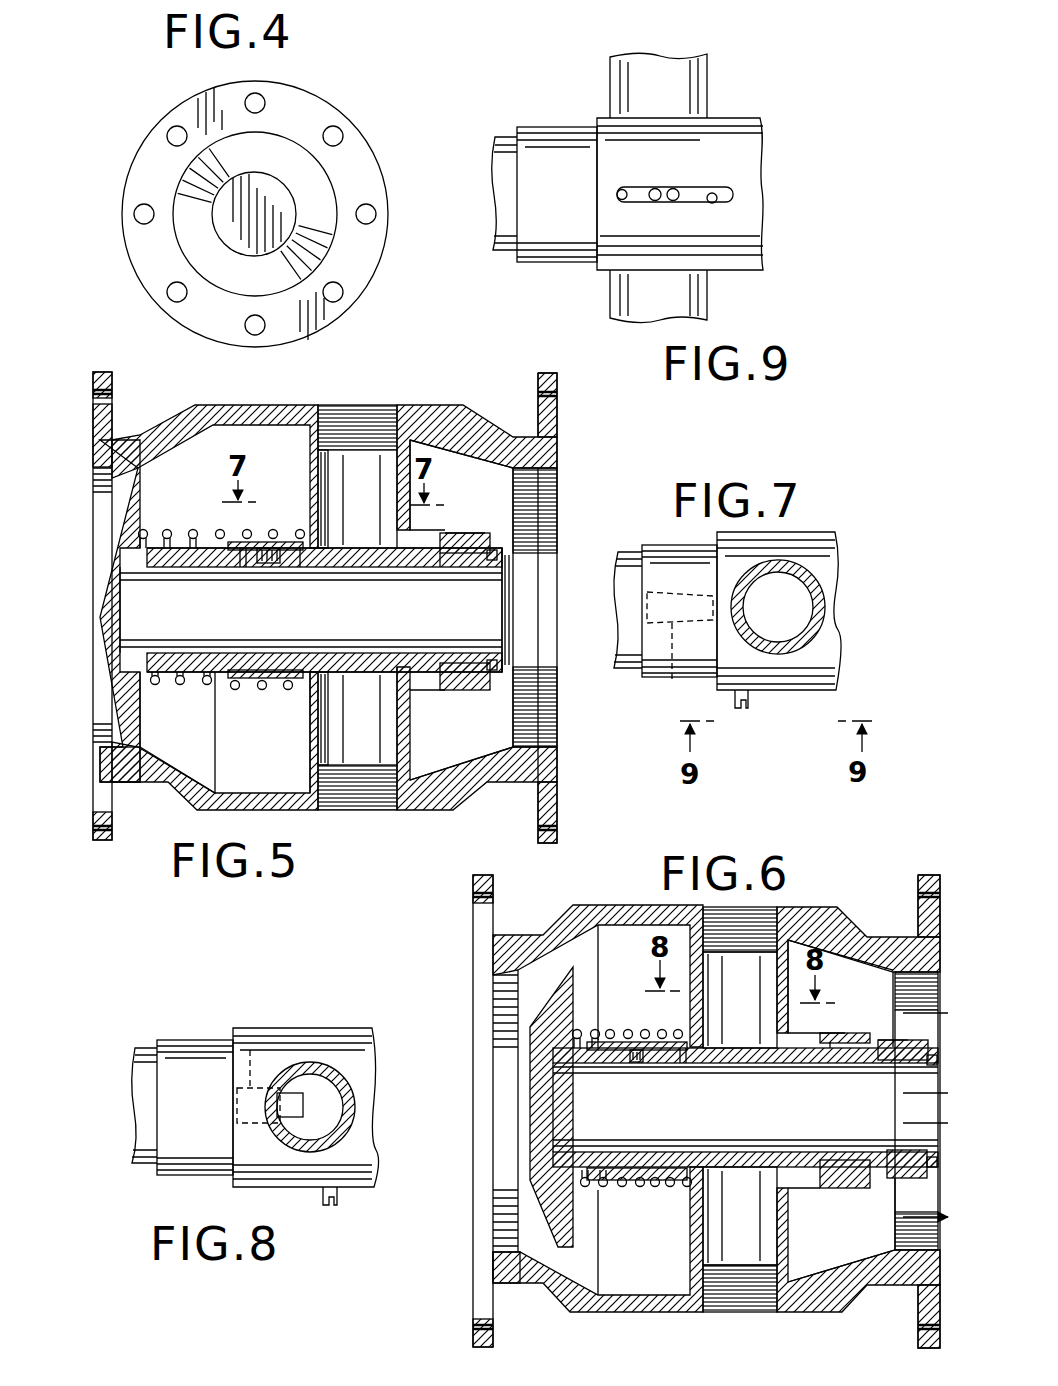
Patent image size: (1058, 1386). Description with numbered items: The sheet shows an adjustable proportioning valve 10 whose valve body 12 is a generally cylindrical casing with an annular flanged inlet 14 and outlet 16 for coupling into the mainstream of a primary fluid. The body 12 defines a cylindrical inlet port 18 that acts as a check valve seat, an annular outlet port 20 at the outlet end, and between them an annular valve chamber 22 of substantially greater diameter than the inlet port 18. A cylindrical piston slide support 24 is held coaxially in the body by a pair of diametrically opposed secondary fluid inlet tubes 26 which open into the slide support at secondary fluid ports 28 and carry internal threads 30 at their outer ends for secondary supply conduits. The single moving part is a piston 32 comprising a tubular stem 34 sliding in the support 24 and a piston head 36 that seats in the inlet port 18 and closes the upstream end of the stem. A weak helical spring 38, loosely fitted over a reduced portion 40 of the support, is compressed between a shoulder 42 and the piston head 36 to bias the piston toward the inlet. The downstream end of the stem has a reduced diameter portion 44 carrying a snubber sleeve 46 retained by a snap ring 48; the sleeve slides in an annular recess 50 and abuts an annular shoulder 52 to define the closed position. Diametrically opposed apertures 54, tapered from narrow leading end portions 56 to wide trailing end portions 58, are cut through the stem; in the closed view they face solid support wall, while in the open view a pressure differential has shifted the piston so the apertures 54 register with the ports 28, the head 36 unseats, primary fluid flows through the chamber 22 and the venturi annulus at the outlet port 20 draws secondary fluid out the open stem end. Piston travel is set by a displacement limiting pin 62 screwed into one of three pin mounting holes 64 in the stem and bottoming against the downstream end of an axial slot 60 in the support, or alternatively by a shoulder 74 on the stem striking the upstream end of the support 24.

In FIG. 4, the adjustable proportioning valve 10 is at (330, 90).
In FIG. 5, the adjustable proportioning valve 10 is at (418, 396).
In FIG. 6, the adjustable proportioning valve 10 is at (835, 892).
In FIG. 5, the valve body 12 is at (252, 405).
In FIG. 6, the valve body 12 is at (605, 905).
In FIG. 4, the inlet 14 is at (358, 168).
In FIG. 5, the inlet 14 is at (92, 437).
In FIG. 6, the inlet 14 is at (473, 941).
In FIG. 5, the outlet 16 is at (557, 452).
In FIG. 6, the outlet 16 is at (928, 905).
In FIG. 4, the inlet port 18 is at (330, 250).
In FIG. 5, the inlet port 18 is at (94, 478).
In FIG. 6, the inlet port 18 is at (623, 957).
In FIG. 5, the outlet port 20 is at (545, 496).
In FIG. 6, the outlet port 20 is at (918, 966).
In FIG. 5, the valve chamber 22 is at (311, 651).
In FIG. 6, the valve chamber 22 is at (745, 1150).
In FIG. 9, the piston slide support 24 is at (752, 162).
In FIG. 5, the piston slide support 24 is at (448, 530).
In FIG. 7, the piston slide support 24 is at (825, 573).
In FIG. 8, the piston slide support 24 is at (348, 1030).
In FIG. 6, the piston slide support 24 is at (816, 1035).
In FIG. 9, the secondary fluid inlet tubes 26 is at (700, 93).
In FIG. 5, the secondary fluid inlet tubes 26 is at (318, 470).
In FIG. 7, the secondary fluid inlet tubes 26 is at (818, 612).
In FIG. 8, the secondary fluid inlet tubes 26 is at (355, 1106).
In FIG. 6, the secondary fluid inlet tubes 26 is at (700, 1013).
In FIG. 5, the secondary fluid ports 28 is at (338, 548).
In FIG. 6, the secondary fluid ports 28 is at (735, 1048).
In FIG. 5, the internal threads 30 is at (380, 410).
In FIG. 6, the internal threads 30 is at (770, 910).
In FIG. 4, the piston 32 is at (232, 273).
In FIG. 5, the piston 32 is at (110, 737).
In FIG. 6, the piston 32 is at (610, 1264).
In FIG. 9, the tubular stem 34 is at (505, 140).
In FIG. 5, the tubular stem 34 is at (200, 686).
In FIG. 7, the tubular stem 34 is at (622, 677).
In FIG. 8, the tubular stem 34 is at (136, 1050).
In FIG. 6, the tubular stem 34 is at (650, 1187).
In FIG. 4, the piston head 36 is at (196, 240).
In FIG. 5, the piston head 36 is at (100, 626).
In FIG. 6, the piston head 36 is at (530, 1083).
In FIG. 5, the helical spring 38 is at (152, 690).
In FIG. 6, the helical spring 38 is at (600, 1030).
In FIG. 9, the reduced portion 40 is at (545, 128).
In FIG. 5, the reduced portion 40 is at (255, 534).
In FIG. 7, the reduced portion 40 is at (655, 546).
In FIG. 8, the reduced portion 40 is at (181, 1042).
In FIG. 6, the reduced portion 40 is at (680, 1187).
In FIG. 5, the shoulder 42 is at (288, 690).
In FIG. 6, the shoulder 42 is at (668, 1167).
In FIG. 5, the reduced diameter portion 44 is at (452, 690).
In FIG. 6, the reduced diameter portion 44 is at (870, 1186).
In FIG. 5, the snubber sleeve 46 is at (470, 535).
In FIG. 6, the snubber sleeve 46 is at (905, 1040).
In FIG. 5, the snap ring 48 is at (498, 556).
In FIG. 6, the snap ring 48 is at (936, 1165).
In FIG. 5, the annular recess 50 is at (466, 556).
In FIG. 6, the annular recess 50 is at (872, 1061).
In FIG. 5, the annular shoulder 52 is at (438, 568).
In FIG. 6, the annular shoulder 52 is at (826, 1045).
In FIG. 5, the apertures 54 is at (268, 565).
In FIG. 7, the apertures 54 is at (672, 686).
In FIG. 8, the apertures 54 is at (282, 1118).
In FIG. 6, the apertures 54 is at (645, 1062).
In FIG. 5, the leading end portions 56 is at (302, 568).
In FIG. 8, the leading end portions 56 is at (297, 1094).
In FIG. 5, the trailing end portions 58 is at (242, 568).
In FIG. 8, the trailing end portions 58 is at (249, 1046).
In FIG. 6, the trailing end portions 58 is at (681, 1064).
In FIG. 9, the slot 60 is at (718, 203).
In FIG. 9, the displacement limiting pin 62 is at (630, 203).
In FIG. 7, the displacement limiting pin 62 is at (750, 700).
In FIG. 8, the displacement limiting pin 62 is at (340, 1198).
In FIG. 9, the pin mounting holes 64 is at (672, 188).
In FIG. 5, the shoulder 74 is at (148, 532).
In FIG. 6, the shoulder 74 is at (590, 1178).